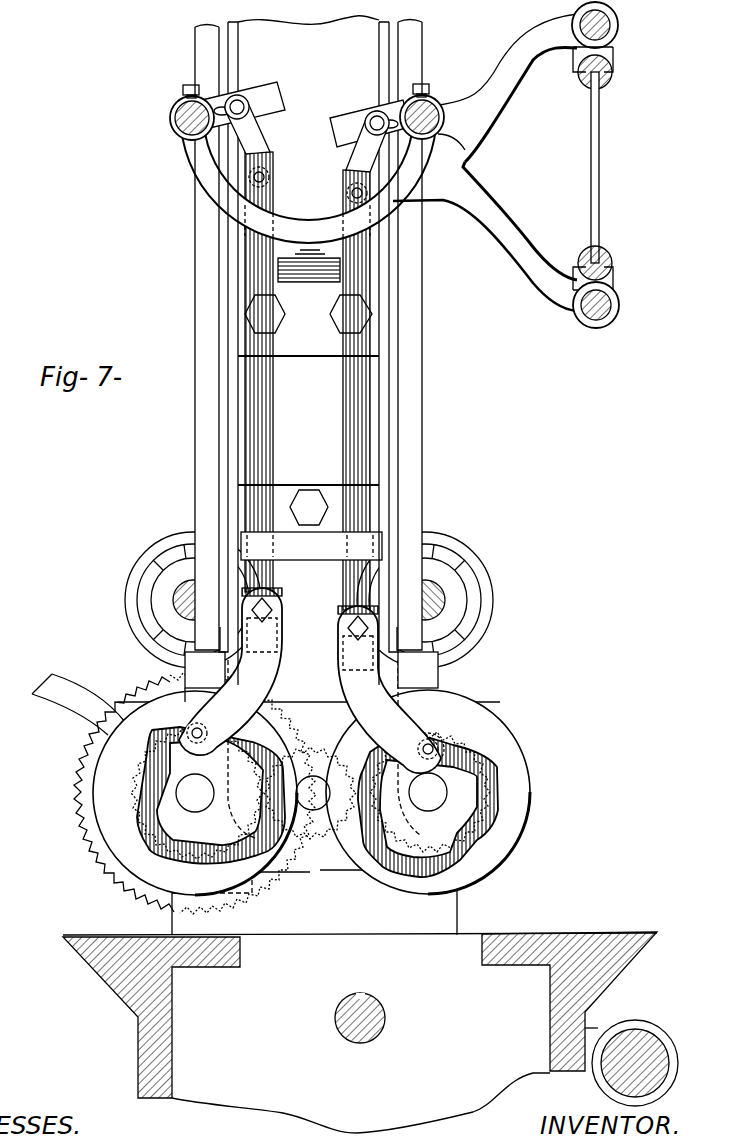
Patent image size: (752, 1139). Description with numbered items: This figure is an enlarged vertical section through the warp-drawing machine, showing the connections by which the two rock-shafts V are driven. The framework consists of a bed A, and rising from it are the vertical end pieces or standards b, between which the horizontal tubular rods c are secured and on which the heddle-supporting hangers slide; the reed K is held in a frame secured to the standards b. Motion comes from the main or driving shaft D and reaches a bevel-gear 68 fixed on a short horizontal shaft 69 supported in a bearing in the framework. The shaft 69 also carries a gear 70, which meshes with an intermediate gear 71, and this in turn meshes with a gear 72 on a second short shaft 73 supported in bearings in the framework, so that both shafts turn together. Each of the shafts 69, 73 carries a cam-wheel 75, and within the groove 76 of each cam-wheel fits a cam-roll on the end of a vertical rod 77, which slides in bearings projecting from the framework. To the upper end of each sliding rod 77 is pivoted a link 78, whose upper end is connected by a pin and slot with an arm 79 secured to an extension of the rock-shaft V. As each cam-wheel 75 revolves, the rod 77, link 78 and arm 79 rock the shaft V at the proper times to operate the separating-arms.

The bed A is at (370, 1032).
The main or driving shaft D is at (386, 1017).
The vertical end pieces or standards b is at (197, 291).
The horizontal tubular rods c is at (178, 597).
The reed K is at (598, 165).
The rock-shaft V is at (172, 117).
The bevel-gear 68 is at (76, 784).
The short horizontal shaft 69 is at (195, 793).
The gear 70 is at (140, 780).
The intermediate gear 71 is at (332, 873).
The gear 72 is at (455, 738).
The short shaft 73 is at (428, 792).
The cam-wheel 75 is at (120, 742).
The groove 76 is at (152, 842).
The vertical rod 77 is at (272, 406).
The link 78 is at (266, 132).
The arm 79 is at (276, 100).